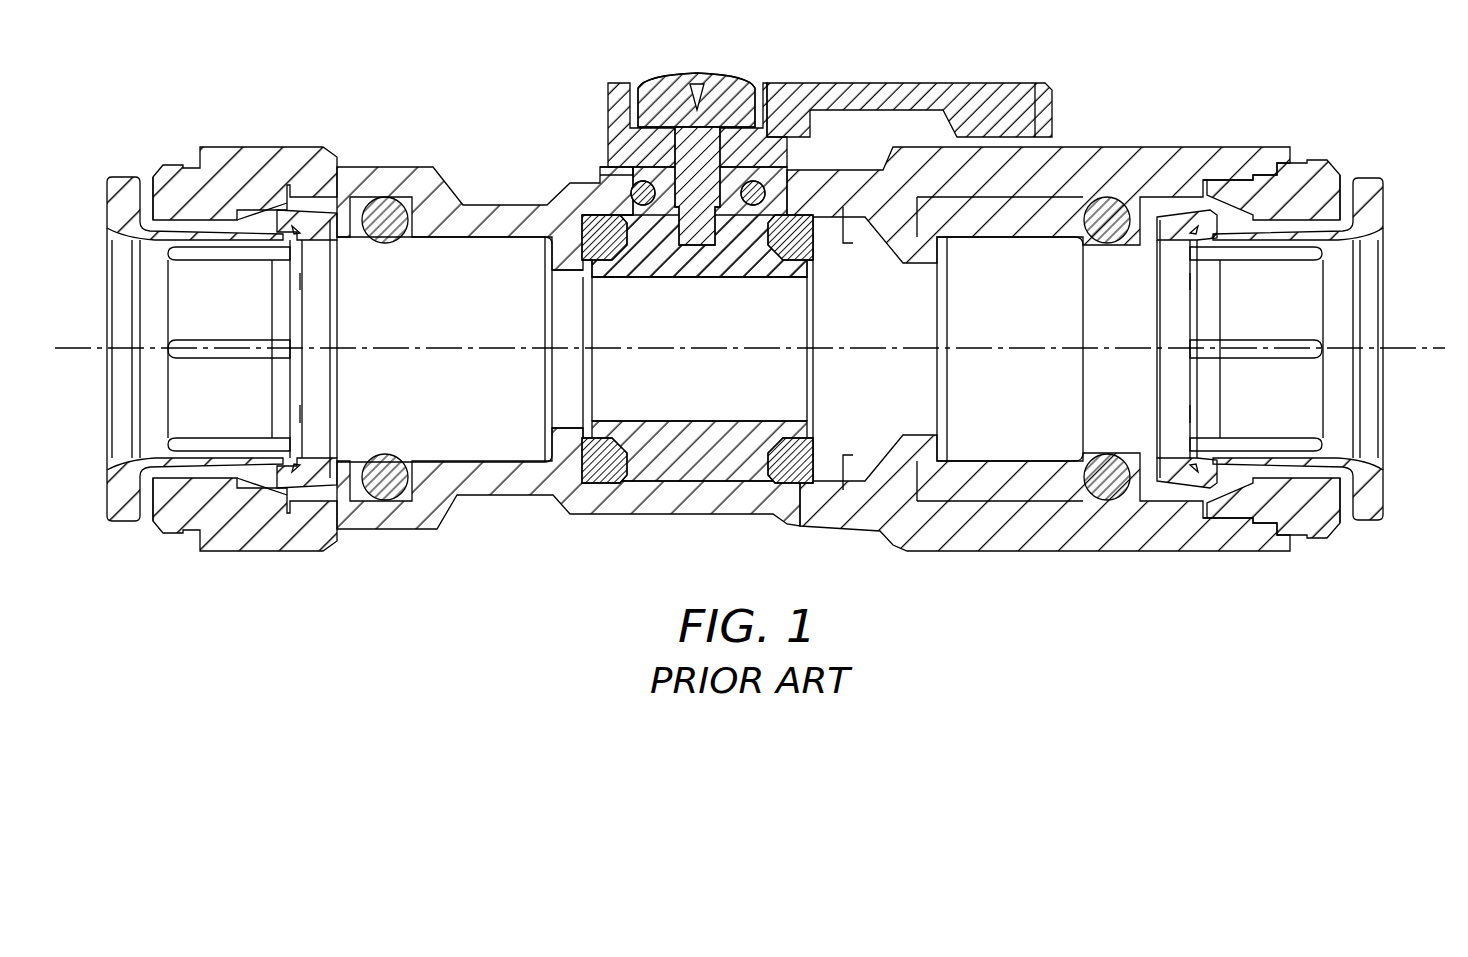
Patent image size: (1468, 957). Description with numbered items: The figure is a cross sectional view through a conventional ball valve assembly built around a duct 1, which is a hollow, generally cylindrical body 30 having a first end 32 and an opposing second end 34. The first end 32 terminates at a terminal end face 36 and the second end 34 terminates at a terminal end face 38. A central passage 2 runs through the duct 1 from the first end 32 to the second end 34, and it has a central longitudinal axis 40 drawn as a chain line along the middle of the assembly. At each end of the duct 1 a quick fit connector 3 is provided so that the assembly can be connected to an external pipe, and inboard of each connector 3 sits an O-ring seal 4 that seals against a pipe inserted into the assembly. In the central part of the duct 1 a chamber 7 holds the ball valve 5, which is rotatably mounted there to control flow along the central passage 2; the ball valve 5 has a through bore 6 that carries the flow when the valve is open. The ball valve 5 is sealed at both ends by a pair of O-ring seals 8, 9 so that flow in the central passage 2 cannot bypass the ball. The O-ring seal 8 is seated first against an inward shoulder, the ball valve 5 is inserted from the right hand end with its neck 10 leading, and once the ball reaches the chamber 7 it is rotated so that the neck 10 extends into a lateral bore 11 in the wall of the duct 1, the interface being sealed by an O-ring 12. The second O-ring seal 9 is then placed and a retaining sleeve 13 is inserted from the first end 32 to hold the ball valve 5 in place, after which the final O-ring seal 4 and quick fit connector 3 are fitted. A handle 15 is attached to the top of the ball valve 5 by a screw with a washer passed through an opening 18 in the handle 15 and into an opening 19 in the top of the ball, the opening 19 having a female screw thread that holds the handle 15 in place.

The duct 1 is at (400, 529).
The central passage 2 is at (472, 380).
The quick fit connector 3 is at (168, 538).
The O-ring seal 4 is at (387, 198).
The ball valve 5 is at (677, 462).
The through bore 6 is at (686, 380).
The chamber 7 is at (730, 480).
The O-ring seal 8 is at (605, 475).
The O-ring seal 9 is at (790, 470).
The neck 10 is at (660, 172).
The lateral bore 11 is at (557, 258).
The O-ring 12 is at (633, 182).
The retaining sleeve 13 is at (1008, 484).
The handle 15 is at (997, 93).
The opening 18 is at (740, 140).
The opening 19 is at (713, 187).
The hollow general cylindrical body 30 is at (1132, 155).
The first end 32 is at (1252, 95).
The second end 34 is at (270, 103).
The terminal end face 36 is at (1296, 150).
The terminal end face 38 is at (202, 160).
The central longitudinal axis 40 is at (1400, 345).